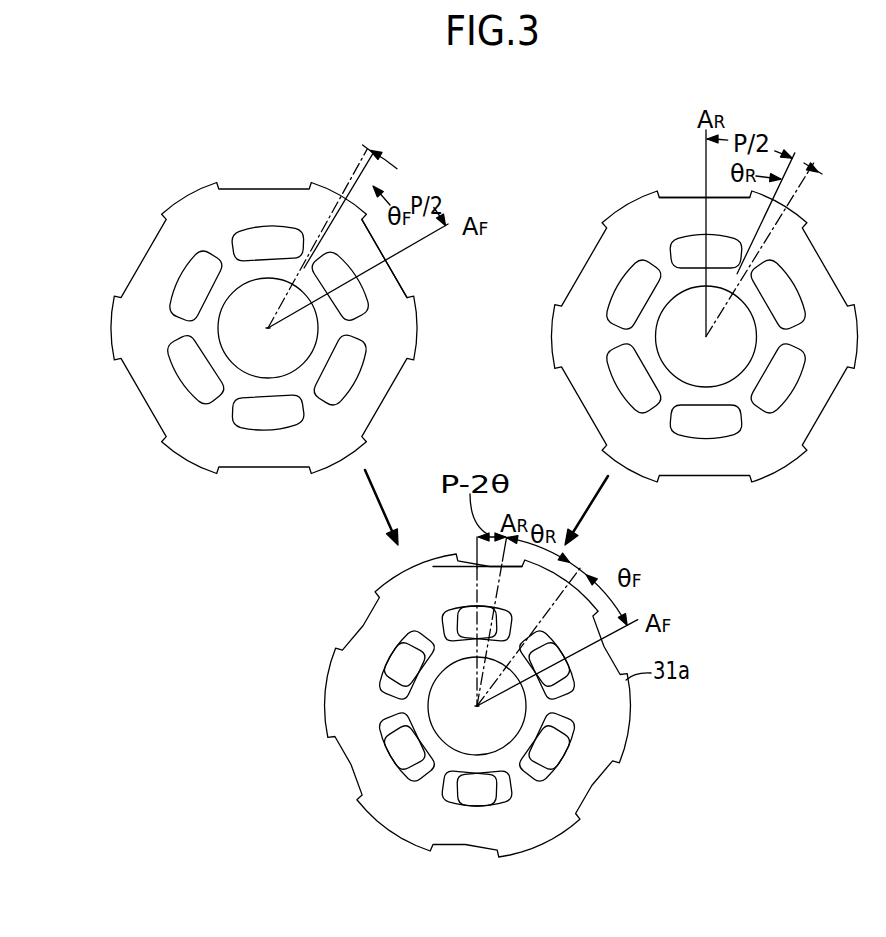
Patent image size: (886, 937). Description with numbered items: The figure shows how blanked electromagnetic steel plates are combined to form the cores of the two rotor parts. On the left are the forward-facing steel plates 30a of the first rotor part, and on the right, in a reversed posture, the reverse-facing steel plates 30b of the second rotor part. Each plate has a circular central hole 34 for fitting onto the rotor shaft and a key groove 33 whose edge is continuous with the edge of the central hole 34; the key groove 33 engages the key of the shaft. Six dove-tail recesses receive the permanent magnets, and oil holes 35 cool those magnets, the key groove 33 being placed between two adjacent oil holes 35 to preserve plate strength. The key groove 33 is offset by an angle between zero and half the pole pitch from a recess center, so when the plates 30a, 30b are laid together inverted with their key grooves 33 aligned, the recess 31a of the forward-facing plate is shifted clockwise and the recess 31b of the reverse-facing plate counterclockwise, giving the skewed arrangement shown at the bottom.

The steel plates of the first rotor part 30a is at (186, 209).
The steel plates of the second rotor part 30b is at (627, 216).
The recess of forward-facing steel plate 31a is at (398, 280).
The recess of reverse-facing steel plate 31b is at (684, 197).
The key groove 33 is at (299, 306).
The central hole 34 is at (240, 290).
The oil holes 35 is at (270, 224).